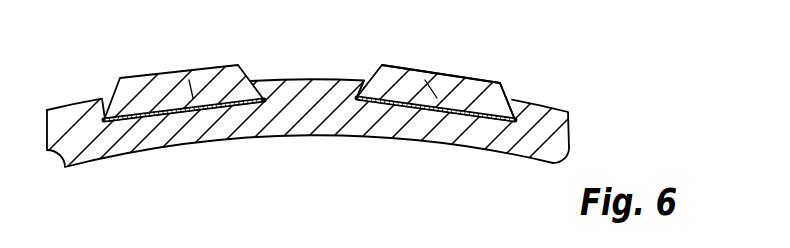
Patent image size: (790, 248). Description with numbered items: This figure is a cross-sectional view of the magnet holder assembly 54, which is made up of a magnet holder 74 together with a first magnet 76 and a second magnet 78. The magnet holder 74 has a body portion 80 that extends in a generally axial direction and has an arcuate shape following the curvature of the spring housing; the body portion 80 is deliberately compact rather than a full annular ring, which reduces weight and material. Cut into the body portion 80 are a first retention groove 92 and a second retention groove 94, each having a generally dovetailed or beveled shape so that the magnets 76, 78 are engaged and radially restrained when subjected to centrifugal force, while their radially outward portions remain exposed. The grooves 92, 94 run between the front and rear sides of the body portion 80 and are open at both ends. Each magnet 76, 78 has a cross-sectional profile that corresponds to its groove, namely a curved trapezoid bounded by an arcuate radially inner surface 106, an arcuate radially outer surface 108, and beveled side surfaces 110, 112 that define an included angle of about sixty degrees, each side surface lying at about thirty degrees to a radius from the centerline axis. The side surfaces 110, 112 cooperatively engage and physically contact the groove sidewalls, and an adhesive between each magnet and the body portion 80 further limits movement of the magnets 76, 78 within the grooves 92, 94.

The magnet holder assembly 54 is at (577, 80).
The magnet holder 74 is at (553, 138).
The first magnet 76 is at (421, 68).
The second magnet 78 is at (172, 71).
The body portion 80 is at (312, 110).
The first retention groove 92 is at (417, 113).
The second retention groove 94 is at (218, 110).
The radially inner surface 106 is at (482, 101).
The radially outer surface 108 is at (468, 74).
The side surface 110 is at (505, 91).
The side surface 112 is at (372, 77).